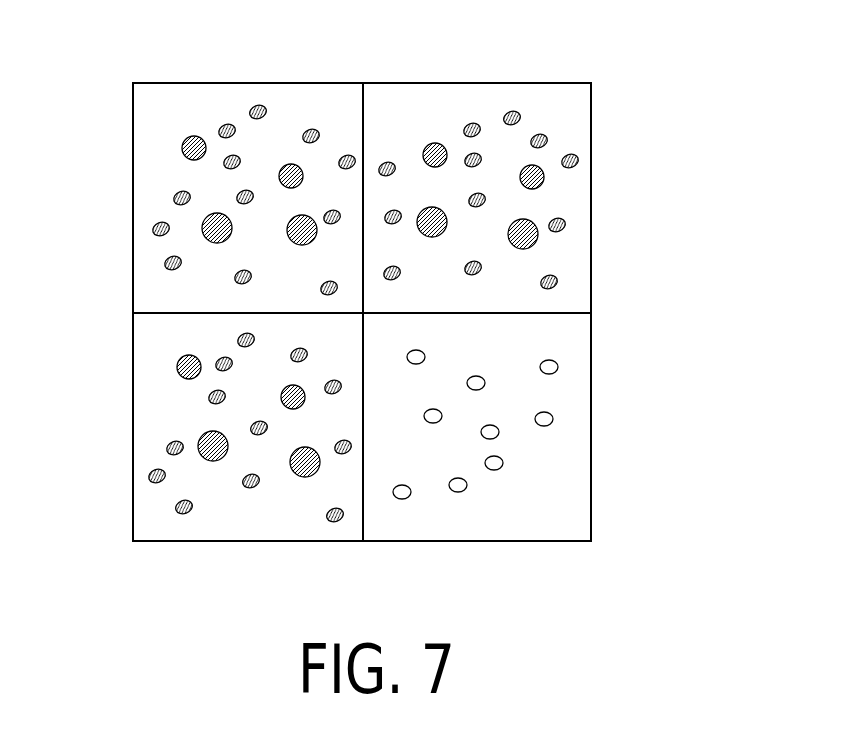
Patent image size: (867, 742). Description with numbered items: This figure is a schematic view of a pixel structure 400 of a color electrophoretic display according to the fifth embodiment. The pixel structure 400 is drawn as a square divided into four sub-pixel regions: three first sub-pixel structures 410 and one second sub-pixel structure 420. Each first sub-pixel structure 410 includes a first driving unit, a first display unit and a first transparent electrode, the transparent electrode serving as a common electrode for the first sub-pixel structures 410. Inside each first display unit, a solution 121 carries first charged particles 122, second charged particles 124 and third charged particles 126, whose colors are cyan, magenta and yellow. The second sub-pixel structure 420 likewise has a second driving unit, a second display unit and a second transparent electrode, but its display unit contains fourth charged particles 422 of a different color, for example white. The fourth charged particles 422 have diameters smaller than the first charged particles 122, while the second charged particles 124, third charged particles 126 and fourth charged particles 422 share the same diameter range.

The pixel structure 400 is at (382, 306).
The first sub-pixel structure 410 is at (353, 306).
The second sub-pixel structure 420 is at (537, 427).
The fourth charged particles 422 is at (553, 418).
The solution 121 is at (143, 253).
The first charged particles 122 is at (182, 146).
The second charged particles 124 is at (262, 103).
The third charged particles 126 is at (313, 128).